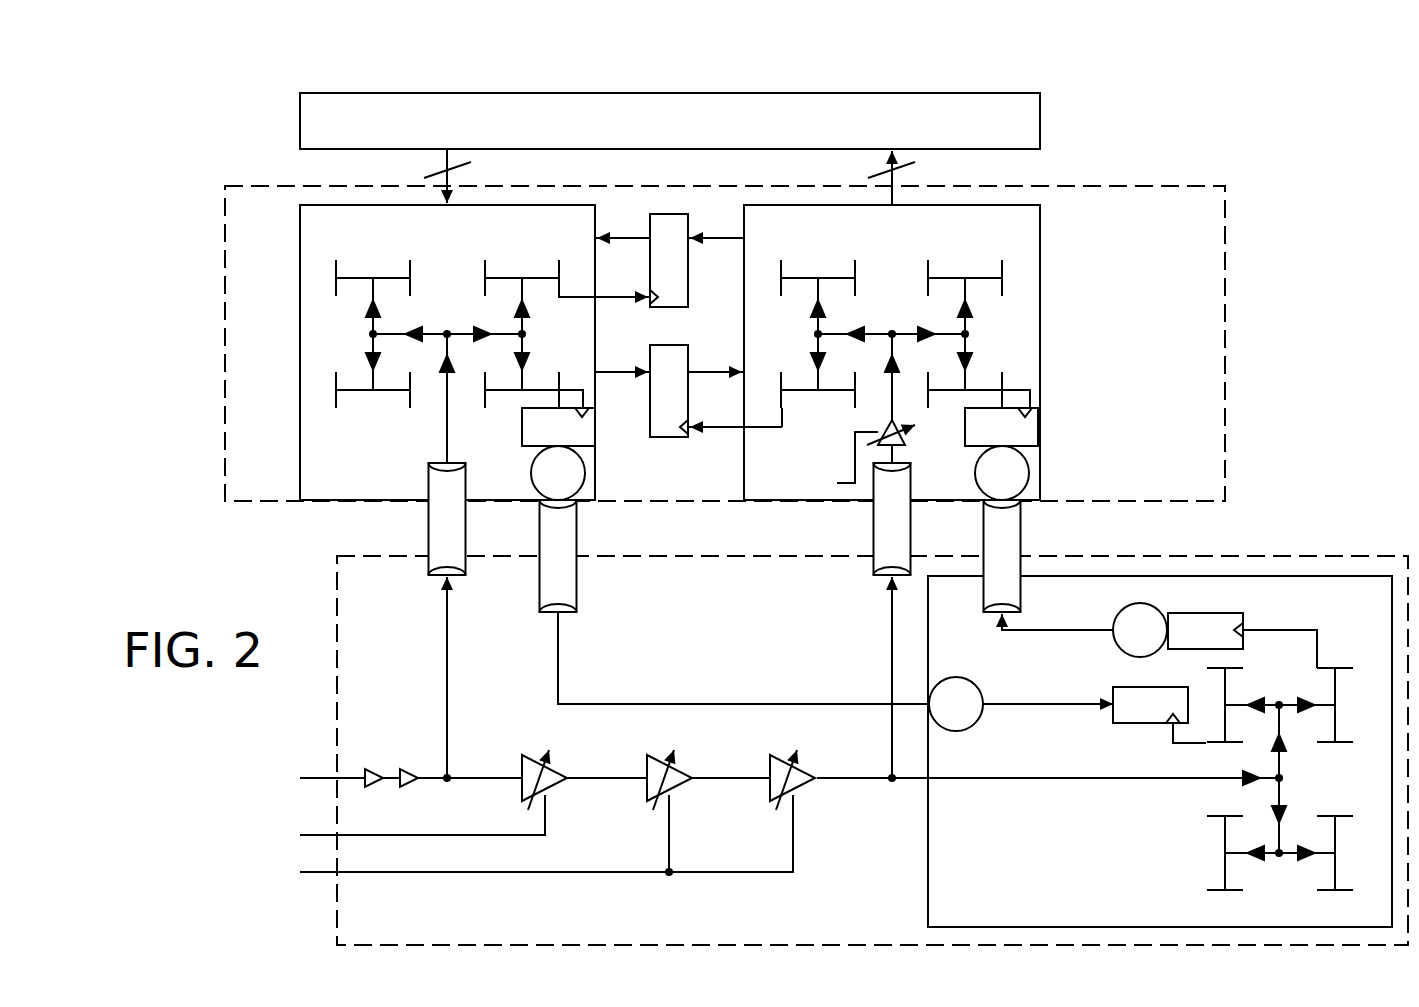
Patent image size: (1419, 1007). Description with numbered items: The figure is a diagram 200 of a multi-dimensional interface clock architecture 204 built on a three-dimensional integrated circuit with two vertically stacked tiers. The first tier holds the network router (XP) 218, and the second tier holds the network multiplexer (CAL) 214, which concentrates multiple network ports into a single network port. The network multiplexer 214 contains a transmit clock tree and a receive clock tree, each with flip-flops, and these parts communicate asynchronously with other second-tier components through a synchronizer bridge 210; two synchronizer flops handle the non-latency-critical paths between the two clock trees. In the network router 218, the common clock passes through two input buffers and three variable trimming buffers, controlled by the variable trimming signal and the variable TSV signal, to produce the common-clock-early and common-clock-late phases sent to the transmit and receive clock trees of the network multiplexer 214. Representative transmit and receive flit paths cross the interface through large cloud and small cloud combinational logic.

The diagram 200 is at (242, 46).
The multi-dimensional (3D) interface clock architecture 204 is at (905, 56).
The synchronizer bridge 210 is at (780, 133).
The network multiplexer (CAL) 214 is at (1172, 233).
The network router (XP) 218 is at (758, 613).